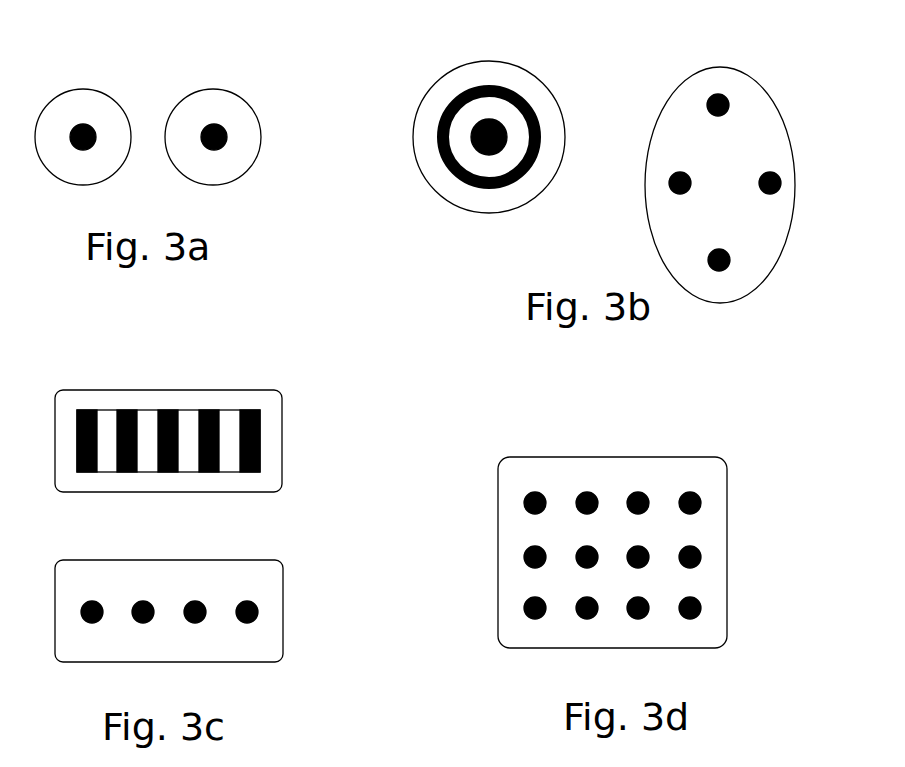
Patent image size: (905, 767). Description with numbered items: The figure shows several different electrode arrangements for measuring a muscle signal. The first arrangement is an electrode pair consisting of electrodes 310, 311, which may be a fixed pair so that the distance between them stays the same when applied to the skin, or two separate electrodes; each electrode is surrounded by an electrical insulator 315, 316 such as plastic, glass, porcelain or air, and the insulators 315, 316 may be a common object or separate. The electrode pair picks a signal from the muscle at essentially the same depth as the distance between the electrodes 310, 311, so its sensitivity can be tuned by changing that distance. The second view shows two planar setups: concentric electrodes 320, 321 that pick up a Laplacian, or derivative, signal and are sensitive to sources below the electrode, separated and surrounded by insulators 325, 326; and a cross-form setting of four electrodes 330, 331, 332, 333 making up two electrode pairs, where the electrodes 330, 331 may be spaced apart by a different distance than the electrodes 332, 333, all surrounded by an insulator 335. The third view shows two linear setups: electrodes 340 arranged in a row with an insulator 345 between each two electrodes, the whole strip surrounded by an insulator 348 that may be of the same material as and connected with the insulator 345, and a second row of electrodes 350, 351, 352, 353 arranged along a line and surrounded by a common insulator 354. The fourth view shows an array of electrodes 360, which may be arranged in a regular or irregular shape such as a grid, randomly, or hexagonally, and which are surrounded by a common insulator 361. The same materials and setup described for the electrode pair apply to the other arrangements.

In FIG. 3A, the electrode 310 is at (80, 126).
In FIG. 3A, the electrode 311 is at (215, 126).
In FIG. 3A, the electrical insulator 315 is at (115, 133).
In FIG. 3A, the electrical insulator 316 is at (256, 135).
In FIG. 3B, the electrode 320 is at (487, 118).
In FIG. 3B, the electrode 321 is at (460, 94).
In FIG. 3B, the insulator 325 is at (520, 133).
In FIG. 3B, the insulator 326 is at (548, 145).
In FIG. 3B, the electrode 330 is at (724, 95).
In FIG. 3B, the electrode 331 is at (725, 268).
In FIG. 3B, the electrode 332 is at (765, 172).
In FIG. 3B, the electrode 333 is at (675, 180).
In FIG. 3B, the insulator 335 is at (770, 227).
In FIG. 3C, the electrodes 340 is at (88, 410).
In FIG. 3C, the insulator 345 is at (188, 420).
In FIG. 3C, the insulator 348 is at (265, 432).
In FIG. 3C, the electrode 350 is at (93, 600).
In FIG. 3C, the electrode 351 is at (145, 600).
In FIG. 3C, the electrode 352 is at (197, 600).
In FIG. 3C, the electrode 353 is at (250, 600).
In FIG. 3C, the rectangular housing 354 is at (275, 620).
In FIG. 3D, the electrodes 360 is at (587, 490).
In FIG. 3D, the common insulator 361 is at (665, 492).